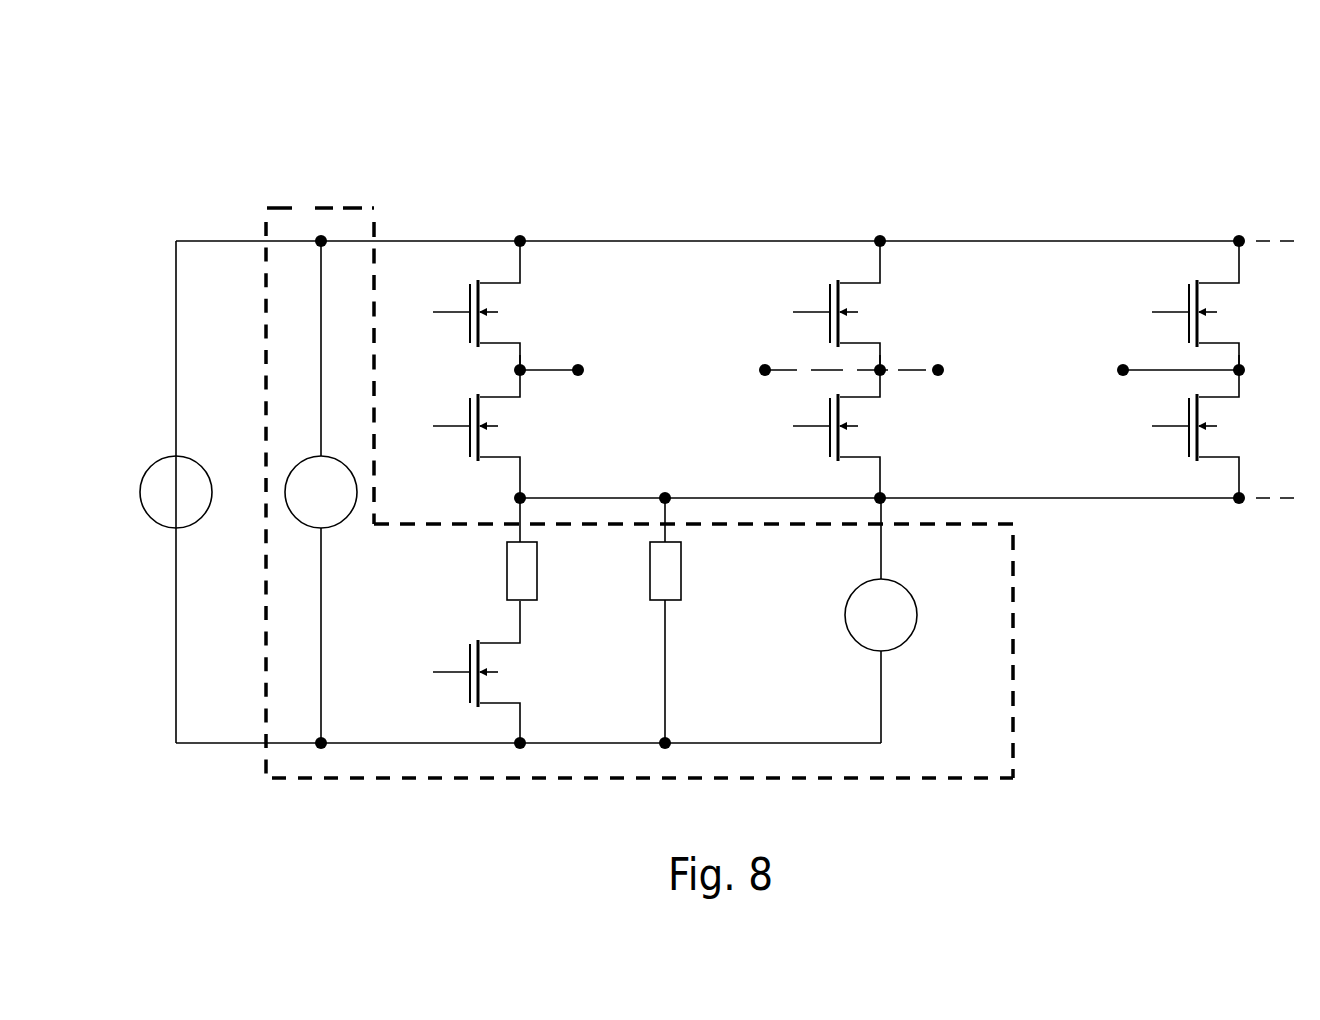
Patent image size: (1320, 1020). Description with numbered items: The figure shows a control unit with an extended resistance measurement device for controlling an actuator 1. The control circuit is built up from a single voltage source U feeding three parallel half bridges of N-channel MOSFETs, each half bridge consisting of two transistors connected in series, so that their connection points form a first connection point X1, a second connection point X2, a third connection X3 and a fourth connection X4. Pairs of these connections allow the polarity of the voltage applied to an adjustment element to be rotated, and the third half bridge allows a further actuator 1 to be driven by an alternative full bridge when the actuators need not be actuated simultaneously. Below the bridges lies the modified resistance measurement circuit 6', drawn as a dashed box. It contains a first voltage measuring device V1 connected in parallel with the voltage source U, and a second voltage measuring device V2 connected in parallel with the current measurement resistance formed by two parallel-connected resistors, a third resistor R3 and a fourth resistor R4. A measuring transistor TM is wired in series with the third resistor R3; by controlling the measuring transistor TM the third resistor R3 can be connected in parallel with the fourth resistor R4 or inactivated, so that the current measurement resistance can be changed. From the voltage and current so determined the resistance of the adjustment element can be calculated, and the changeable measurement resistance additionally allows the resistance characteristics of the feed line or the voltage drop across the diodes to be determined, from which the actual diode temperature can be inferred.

The actuator 1 is at (720, 397).
The modified resistance measurement circuit 6' is at (583, 431).
The voltage source U is at (189, 492).
The first voltage measuring device V1 is at (321, 492).
The second voltage measuring device V2 is at (881, 615).
The third resistor R3 is at (483, 571).
The fourth resistor R4 is at (630, 571).
The measuring transistor TM is at (444, 665).
The first connection point X1 is at (581, 374).
The second connection point X2 is at (786, 374).
The third connection X3 is at (941, 374).
The fourth connection X4 is at (1146, 374).